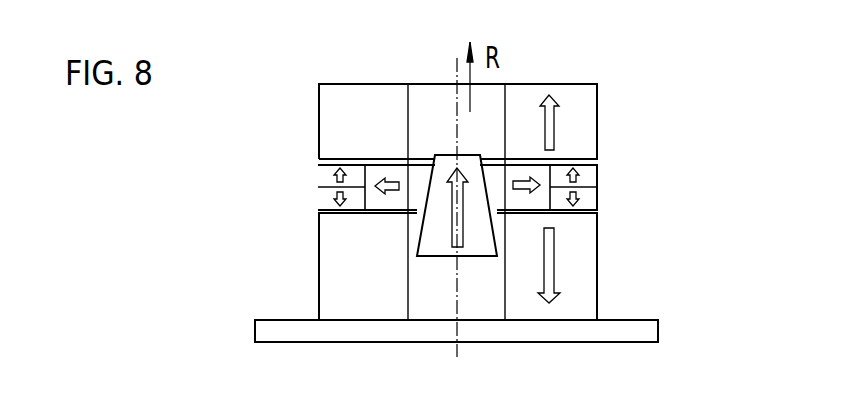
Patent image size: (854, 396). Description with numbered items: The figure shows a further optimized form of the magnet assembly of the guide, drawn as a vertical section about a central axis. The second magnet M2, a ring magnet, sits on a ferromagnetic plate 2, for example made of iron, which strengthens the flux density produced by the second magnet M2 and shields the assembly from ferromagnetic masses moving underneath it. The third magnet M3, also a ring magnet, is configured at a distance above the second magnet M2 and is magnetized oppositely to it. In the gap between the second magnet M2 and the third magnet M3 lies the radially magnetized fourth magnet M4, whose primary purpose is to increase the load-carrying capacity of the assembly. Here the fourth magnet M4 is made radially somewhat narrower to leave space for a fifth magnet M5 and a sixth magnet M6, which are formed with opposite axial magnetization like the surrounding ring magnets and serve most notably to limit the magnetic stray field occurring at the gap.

The ferromagnetic plate 2 is at (645, 337).
The second magnet M2 is at (583, 279).
The third magnet M3 is at (573, 95).
The fourth magnet M4 is at (533, 175).
The fifth magnet M5 is at (592, 172).
The sixth magnet M6 is at (592, 197).